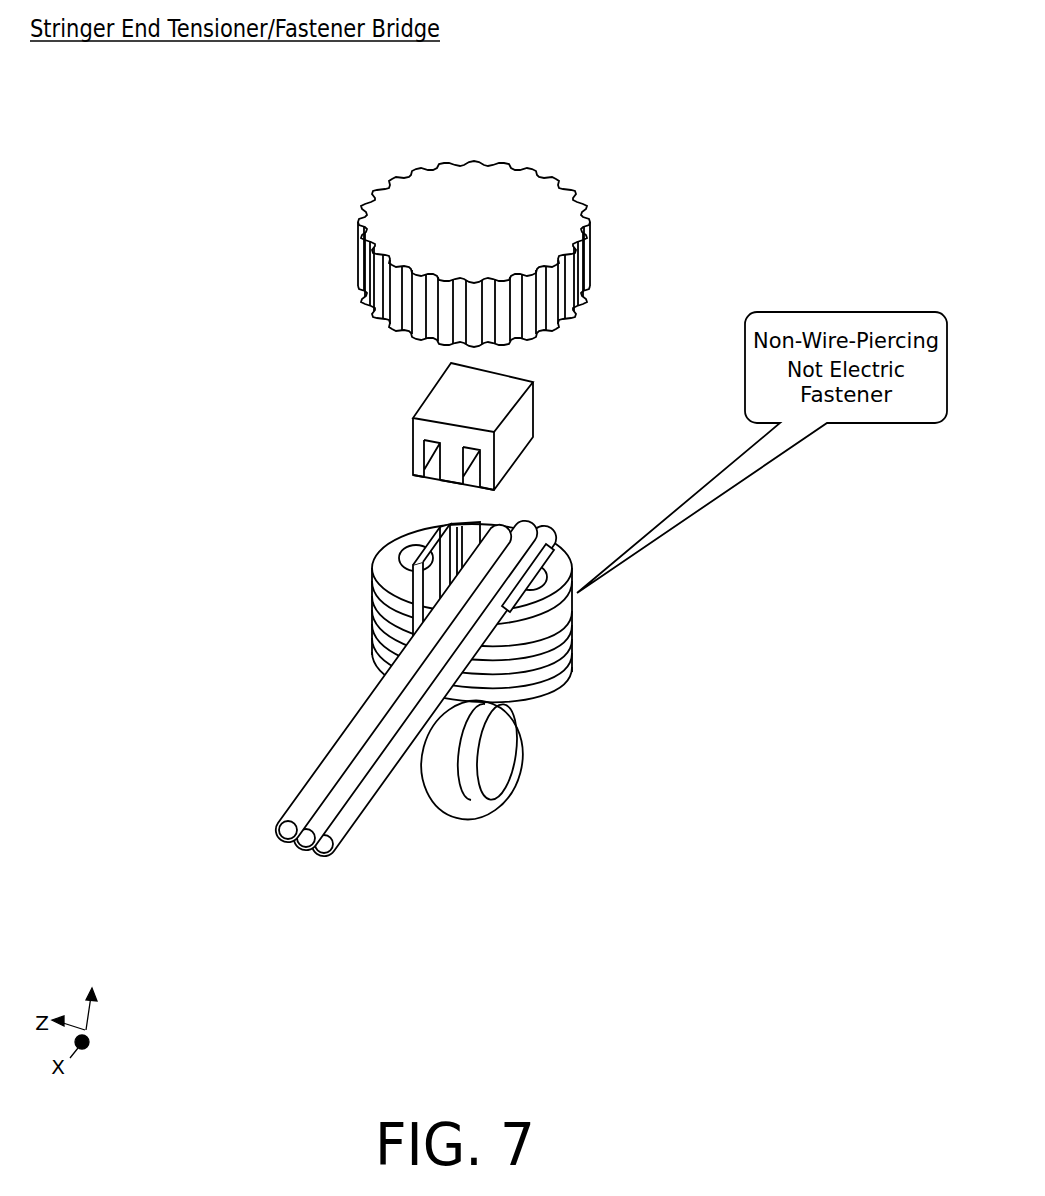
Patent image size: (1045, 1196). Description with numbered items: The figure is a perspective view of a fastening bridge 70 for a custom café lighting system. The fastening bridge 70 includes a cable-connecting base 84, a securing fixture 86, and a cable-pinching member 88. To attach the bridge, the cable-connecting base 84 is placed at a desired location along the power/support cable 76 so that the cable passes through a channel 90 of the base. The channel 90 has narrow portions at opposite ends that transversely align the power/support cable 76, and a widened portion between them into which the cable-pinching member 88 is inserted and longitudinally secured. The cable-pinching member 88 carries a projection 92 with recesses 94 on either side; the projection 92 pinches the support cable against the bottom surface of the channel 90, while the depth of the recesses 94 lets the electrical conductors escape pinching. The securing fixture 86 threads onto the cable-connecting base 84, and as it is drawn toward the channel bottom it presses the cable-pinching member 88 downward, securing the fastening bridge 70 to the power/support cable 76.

The fastening bridge 70 is at (293, 460).
The power/support cable 76 is at (548, 540).
The cable-connecting base 84 is at (570, 618).
The securing fixture 86 is at (580, 283).
The cable-pinching member 88 is at (467, 441).
The channel 90 is at (402, 665).
The projection 92 is at (452, 482).
The recesses 94 is at (428, 482).